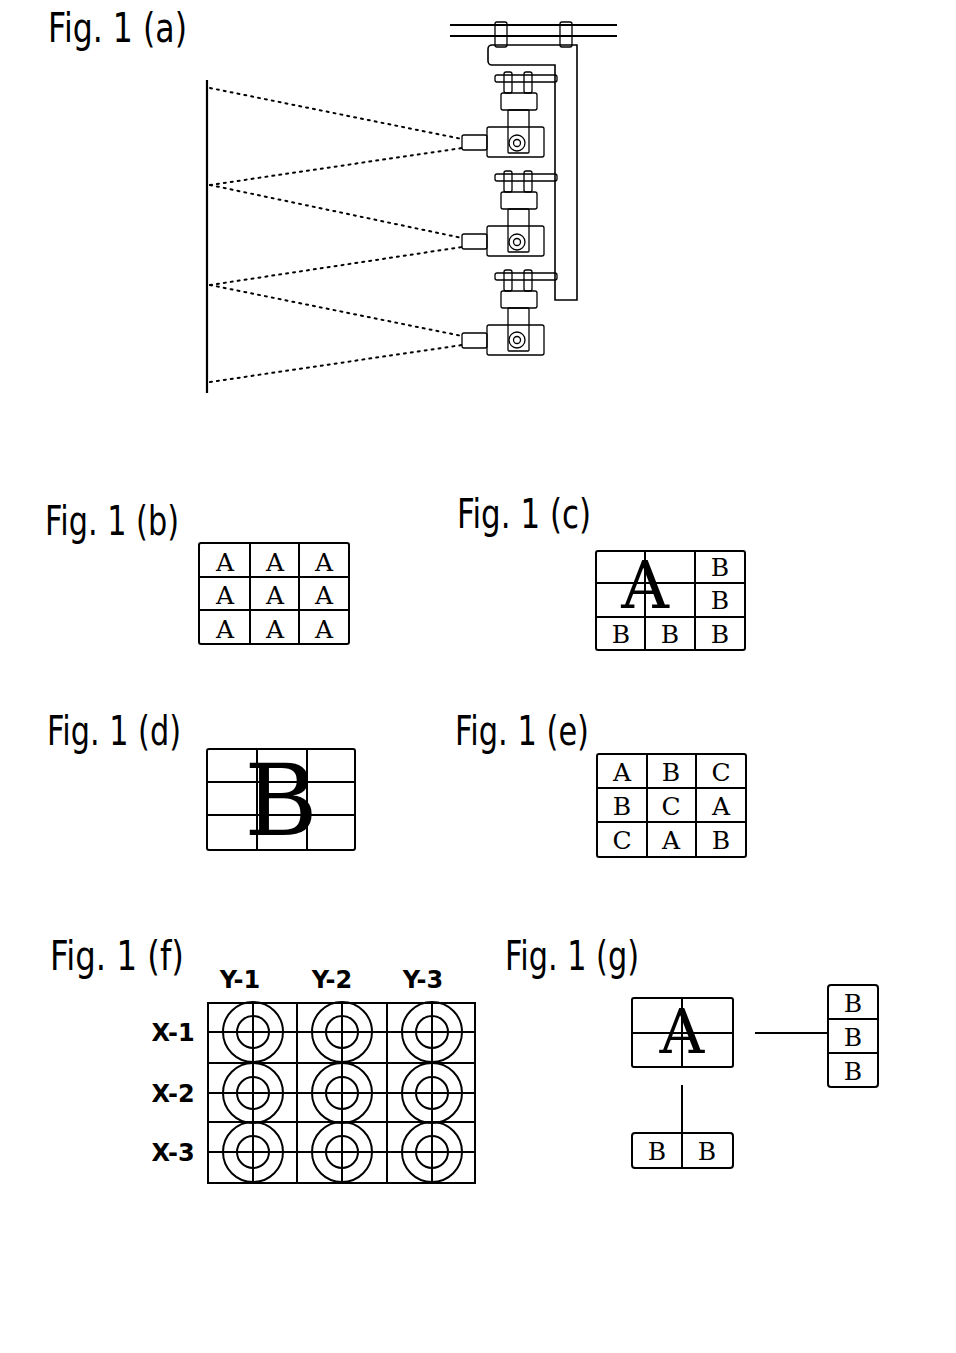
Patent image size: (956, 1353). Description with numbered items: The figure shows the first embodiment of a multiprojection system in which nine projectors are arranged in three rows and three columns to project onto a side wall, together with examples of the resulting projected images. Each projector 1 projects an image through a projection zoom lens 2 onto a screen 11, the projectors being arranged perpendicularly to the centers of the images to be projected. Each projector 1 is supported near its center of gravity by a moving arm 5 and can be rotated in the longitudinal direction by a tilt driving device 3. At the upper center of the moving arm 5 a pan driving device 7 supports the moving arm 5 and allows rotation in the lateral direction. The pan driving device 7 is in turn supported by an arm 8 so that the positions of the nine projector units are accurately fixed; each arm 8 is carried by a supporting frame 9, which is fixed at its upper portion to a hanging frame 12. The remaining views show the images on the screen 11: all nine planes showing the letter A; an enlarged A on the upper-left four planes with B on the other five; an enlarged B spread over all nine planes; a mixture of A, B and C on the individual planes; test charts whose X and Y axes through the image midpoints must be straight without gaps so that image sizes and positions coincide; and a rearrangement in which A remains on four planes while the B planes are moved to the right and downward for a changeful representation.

The projector 1 is at (498, 343).
The projection zoom lens 2 is at (465, 347).
The tilt driving device 3 is at (514, 345).
The moving arm 5 is at (520, 318).
The pan driving device 7 is at (501, 298).
The arm 8 is at (542, 275).
The supporting frame 9 is at (562, 207).
The screen 11 is at (207, 345).
The hanging frame 12 is at (590, 25).